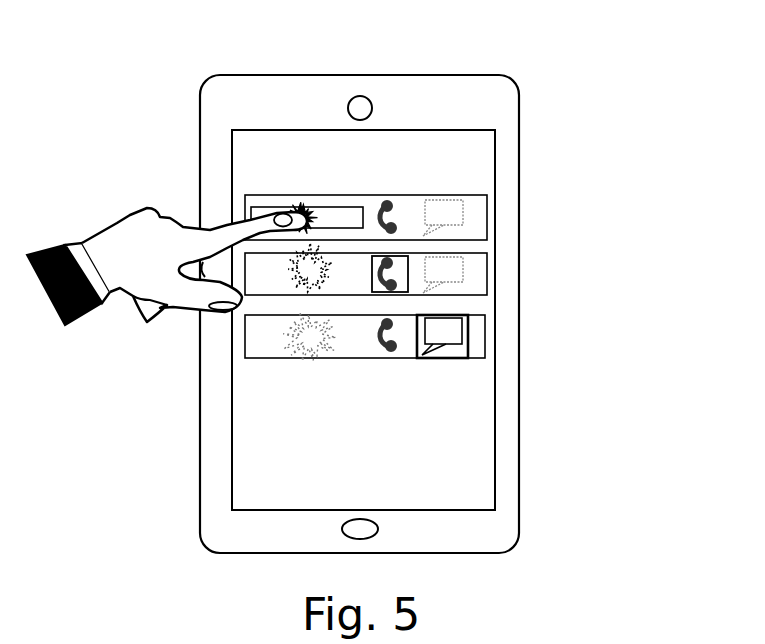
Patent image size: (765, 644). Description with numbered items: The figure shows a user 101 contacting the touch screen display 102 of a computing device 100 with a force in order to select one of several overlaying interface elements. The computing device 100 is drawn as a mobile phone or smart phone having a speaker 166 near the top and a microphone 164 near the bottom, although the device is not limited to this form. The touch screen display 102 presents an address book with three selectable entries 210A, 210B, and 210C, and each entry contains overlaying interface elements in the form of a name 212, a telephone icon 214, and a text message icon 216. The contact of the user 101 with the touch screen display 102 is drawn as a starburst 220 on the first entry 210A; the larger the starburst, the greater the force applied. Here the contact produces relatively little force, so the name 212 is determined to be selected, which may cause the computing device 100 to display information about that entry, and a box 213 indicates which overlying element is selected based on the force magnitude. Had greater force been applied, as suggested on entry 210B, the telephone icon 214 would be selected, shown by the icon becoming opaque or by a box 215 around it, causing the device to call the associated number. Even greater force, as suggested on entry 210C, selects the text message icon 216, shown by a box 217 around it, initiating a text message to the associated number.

The computing device 100 is at (587, 72).
The user 101 is at (117, 220).
The touch screen display 102 is at (232, 154).
The microphone 164 is at (378, 531).
The speaker 166 is at (350, 116).
The selectable entry 210A is at (487, 232).
The selectable entry 210B is at (487, 282).
The selectable entry 210C is at (485, 345).
The name 212 is at (323, 213).
The box 213 is at (382, 200).
The telephone icon 214 is at (393, 212).
The box 215 is at (410, 293).
The text message icon 216 is at (463, 215).
The box 217 is at (467, 350).
The starburst 220 is at (300, 202).